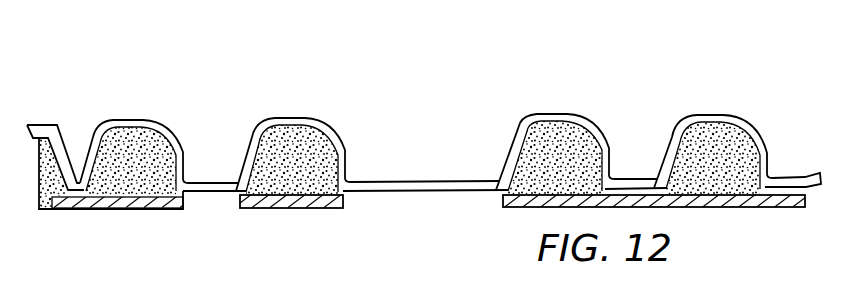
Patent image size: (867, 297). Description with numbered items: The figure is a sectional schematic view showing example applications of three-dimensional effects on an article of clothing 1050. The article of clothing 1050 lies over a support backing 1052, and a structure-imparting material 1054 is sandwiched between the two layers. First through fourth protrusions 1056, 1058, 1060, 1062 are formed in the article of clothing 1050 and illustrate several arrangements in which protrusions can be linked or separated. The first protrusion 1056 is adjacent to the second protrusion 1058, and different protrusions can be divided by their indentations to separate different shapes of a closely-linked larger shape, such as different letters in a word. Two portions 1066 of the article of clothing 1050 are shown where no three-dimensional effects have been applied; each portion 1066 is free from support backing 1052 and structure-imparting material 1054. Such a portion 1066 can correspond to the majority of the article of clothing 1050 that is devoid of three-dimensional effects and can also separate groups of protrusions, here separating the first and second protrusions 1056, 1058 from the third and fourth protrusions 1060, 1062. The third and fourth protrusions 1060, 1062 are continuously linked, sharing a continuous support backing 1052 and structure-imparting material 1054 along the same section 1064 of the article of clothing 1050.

The article of clothing 1050 is at (43, 124).
The support backing 1052 is at (137, 206).
The structure-imparting material 1054 is at (48, 176).
The first protrusion 1056 is at (130, 119).
The second protrusion 1058 is at (292, 117).
The third protrusion 1060 is at (553, 113).
The fourth protrusion 1062 is at (717, 113).
The section of the article of clothing 1064 is at (647, 93).
The portion of the article of clothing 1066 is at (207, 182).